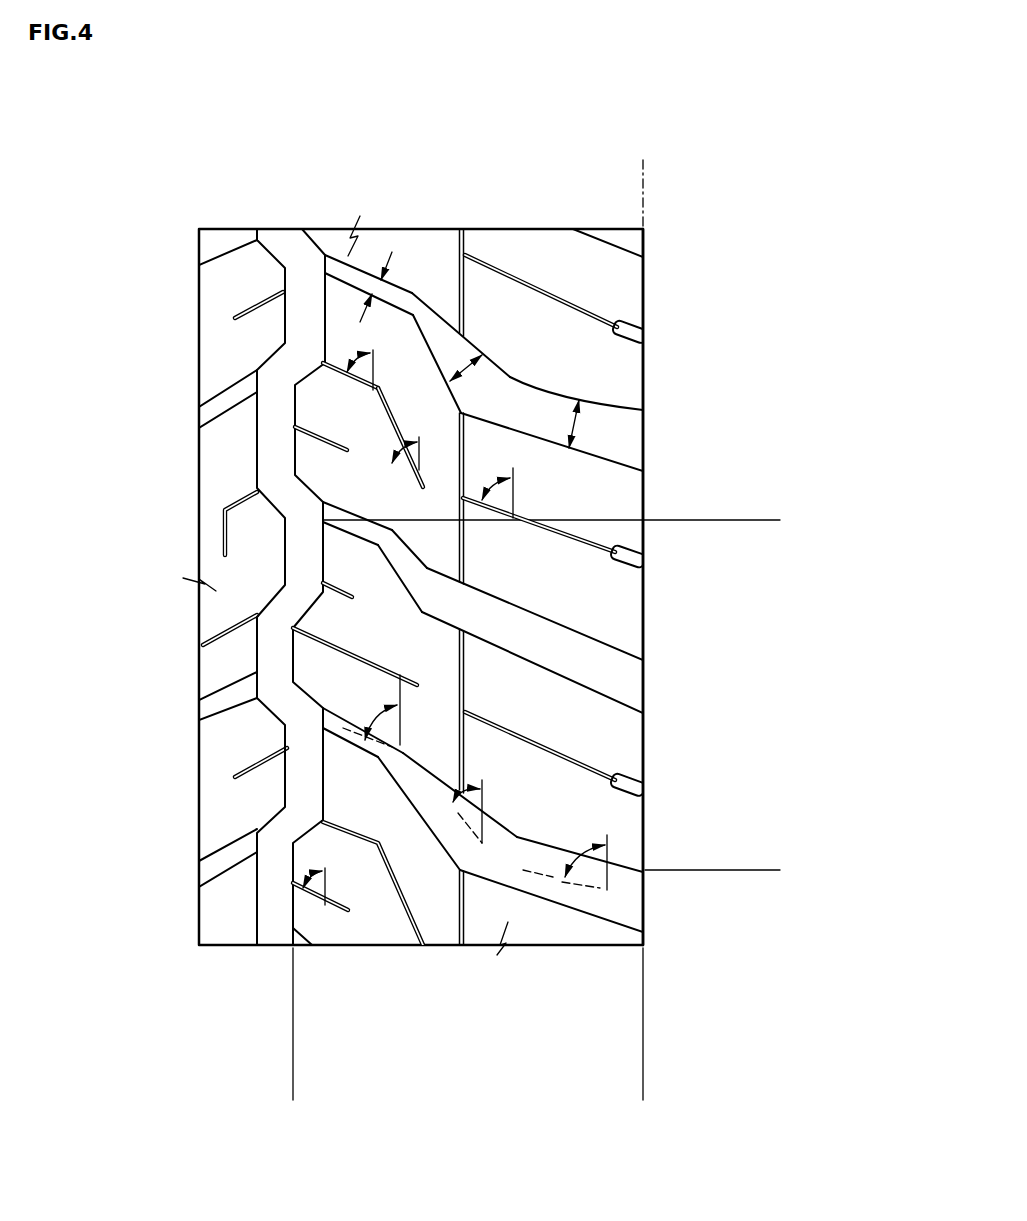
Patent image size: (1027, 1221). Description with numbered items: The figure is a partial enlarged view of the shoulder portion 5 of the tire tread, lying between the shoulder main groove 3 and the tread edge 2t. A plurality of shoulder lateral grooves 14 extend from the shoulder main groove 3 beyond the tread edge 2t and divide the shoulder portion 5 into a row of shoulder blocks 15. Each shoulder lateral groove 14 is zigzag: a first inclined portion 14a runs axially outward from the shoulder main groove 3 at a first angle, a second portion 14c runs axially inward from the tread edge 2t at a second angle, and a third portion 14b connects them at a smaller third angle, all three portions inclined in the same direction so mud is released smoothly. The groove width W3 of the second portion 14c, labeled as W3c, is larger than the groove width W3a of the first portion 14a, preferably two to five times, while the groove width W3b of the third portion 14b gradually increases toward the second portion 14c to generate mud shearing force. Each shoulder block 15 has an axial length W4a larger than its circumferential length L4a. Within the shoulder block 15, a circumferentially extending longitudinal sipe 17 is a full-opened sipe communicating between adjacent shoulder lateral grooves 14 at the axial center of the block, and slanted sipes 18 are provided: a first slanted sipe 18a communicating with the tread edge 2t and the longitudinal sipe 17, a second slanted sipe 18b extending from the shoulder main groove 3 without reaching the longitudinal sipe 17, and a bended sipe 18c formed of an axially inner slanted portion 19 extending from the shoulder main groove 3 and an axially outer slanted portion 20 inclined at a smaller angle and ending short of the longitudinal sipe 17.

The shoulder main groove 3 is at (289, 250).
The shoulder portion 5 is at (500, 252).
The tread edge 2t is at (646, 292).
The shoulder lateral groove 14 is at (483, 658).
The first inclined portion 14a is at (378, 760).
The third portion 14b is at (457, 840).
The second portion 14c is at (532, 696).
The shoulder block 15 is at (338, 696).
The longitudinal sipe 17 is at (458, 658).
The slanted sipe 18 is at (399, 604).
The first slanted sipe 18a is at (578, 549).
The second slanted sipe 18b is at (322, 899).
The bended sipe 18c is at (226, 425).
The axially inner slanted portion 19 is at (345, 368).
The axially outer slanted portion 20 is at (390, 419).
The groove width of the first portion W3a is at (386, 262).
The groove width of the third portion W3b is at (487, 360).
The groove width W3 is at (577, 430).
The axial length of the shoulder block W4a is at (643, 1093).
The circumferential length of the shoulder block L4a is at (773, 520).